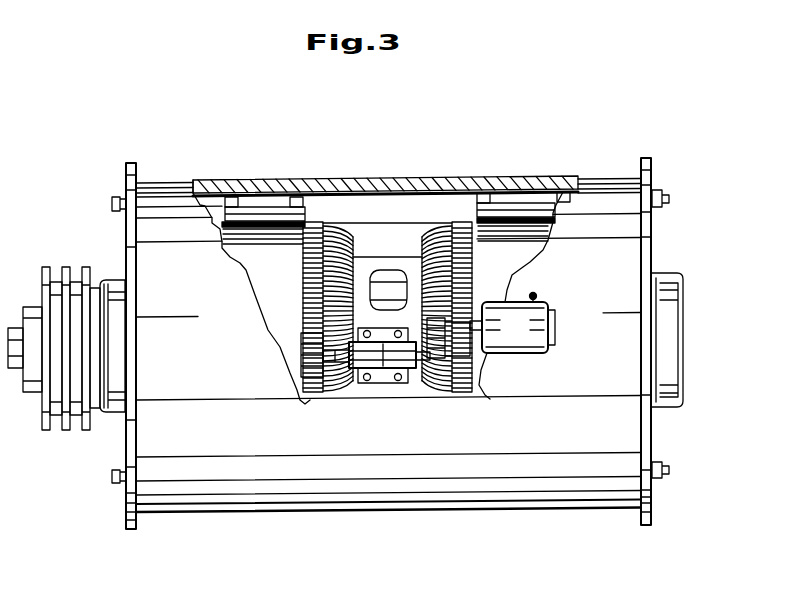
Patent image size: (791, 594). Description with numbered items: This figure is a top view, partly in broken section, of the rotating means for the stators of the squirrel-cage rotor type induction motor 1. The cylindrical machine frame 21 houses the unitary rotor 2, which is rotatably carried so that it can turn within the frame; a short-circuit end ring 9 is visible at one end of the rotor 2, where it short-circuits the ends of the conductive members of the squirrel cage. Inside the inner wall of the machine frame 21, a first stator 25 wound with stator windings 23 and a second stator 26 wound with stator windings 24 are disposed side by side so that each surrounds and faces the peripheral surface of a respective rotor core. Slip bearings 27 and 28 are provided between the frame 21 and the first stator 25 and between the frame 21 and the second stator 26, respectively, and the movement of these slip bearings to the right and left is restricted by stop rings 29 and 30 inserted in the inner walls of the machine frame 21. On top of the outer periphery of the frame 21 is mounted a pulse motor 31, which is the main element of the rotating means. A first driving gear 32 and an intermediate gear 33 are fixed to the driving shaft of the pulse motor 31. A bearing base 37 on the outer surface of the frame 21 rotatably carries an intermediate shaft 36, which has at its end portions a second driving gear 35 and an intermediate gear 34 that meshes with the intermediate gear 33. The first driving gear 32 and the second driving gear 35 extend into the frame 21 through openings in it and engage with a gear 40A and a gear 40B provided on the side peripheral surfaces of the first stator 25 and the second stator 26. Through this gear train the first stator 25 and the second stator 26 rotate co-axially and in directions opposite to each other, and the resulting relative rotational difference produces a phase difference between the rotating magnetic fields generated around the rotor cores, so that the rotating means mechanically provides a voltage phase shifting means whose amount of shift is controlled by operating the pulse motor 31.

The squirrel-cage rotor type induction motor 1 is at (134, 156).
The rotor 2 is at (385, 290).
The short-circuit end ring 9 is at (585, 190).
The machine frame 21 is at (608, 205).
The stator windings 23 is at (435, 230).
The stator windings 24 is at (338, 200).
The first stator 25 is at (518, 240).
The second stator 26 is at (230, 210).
The slip bearing 27 is at (488, 195).
The slip bearing 28 is at (215, 252).
The stop ring 29 is at (478, 203).
The stop ring 30 is at (222, 196).
The pulse motor 31 is at (518, 353).
The first driving gear 32 is at (472, 387).
The intermediate gear 33 is at (422, 282).
The intermediate gear 34 is at (443, 390).
The second driving gear 35 is at (322, 397).
The intermediate shaft 36 is at (350, 393).
The bearing base 37 is at (395, 395).
The gear 40A is at (455, 235).
The gear 40B is at (313, 240).